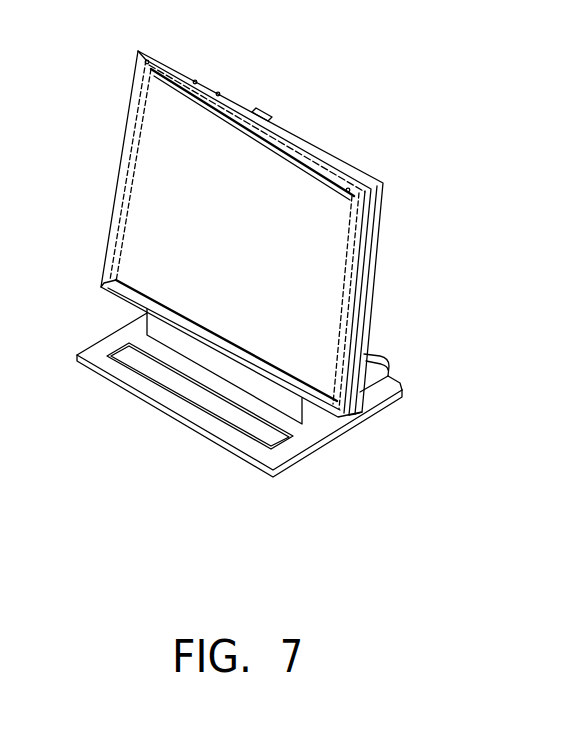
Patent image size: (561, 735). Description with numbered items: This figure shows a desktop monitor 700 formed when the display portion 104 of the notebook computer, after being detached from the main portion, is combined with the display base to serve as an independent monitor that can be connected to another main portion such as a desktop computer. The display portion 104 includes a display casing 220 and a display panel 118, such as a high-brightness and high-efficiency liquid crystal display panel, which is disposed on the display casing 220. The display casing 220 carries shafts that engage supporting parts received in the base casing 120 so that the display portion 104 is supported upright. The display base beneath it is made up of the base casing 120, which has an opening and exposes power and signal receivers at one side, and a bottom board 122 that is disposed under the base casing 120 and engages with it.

The desktop monitor 700 is at (514, 73).
The display portion 104 is at (114, 175).
The display casing 220 is at (232, 104).
The display panel 118 is at (273, 163).
The base casing 120 is at (368, 377).
The bottom board 122 is at (309, 453).